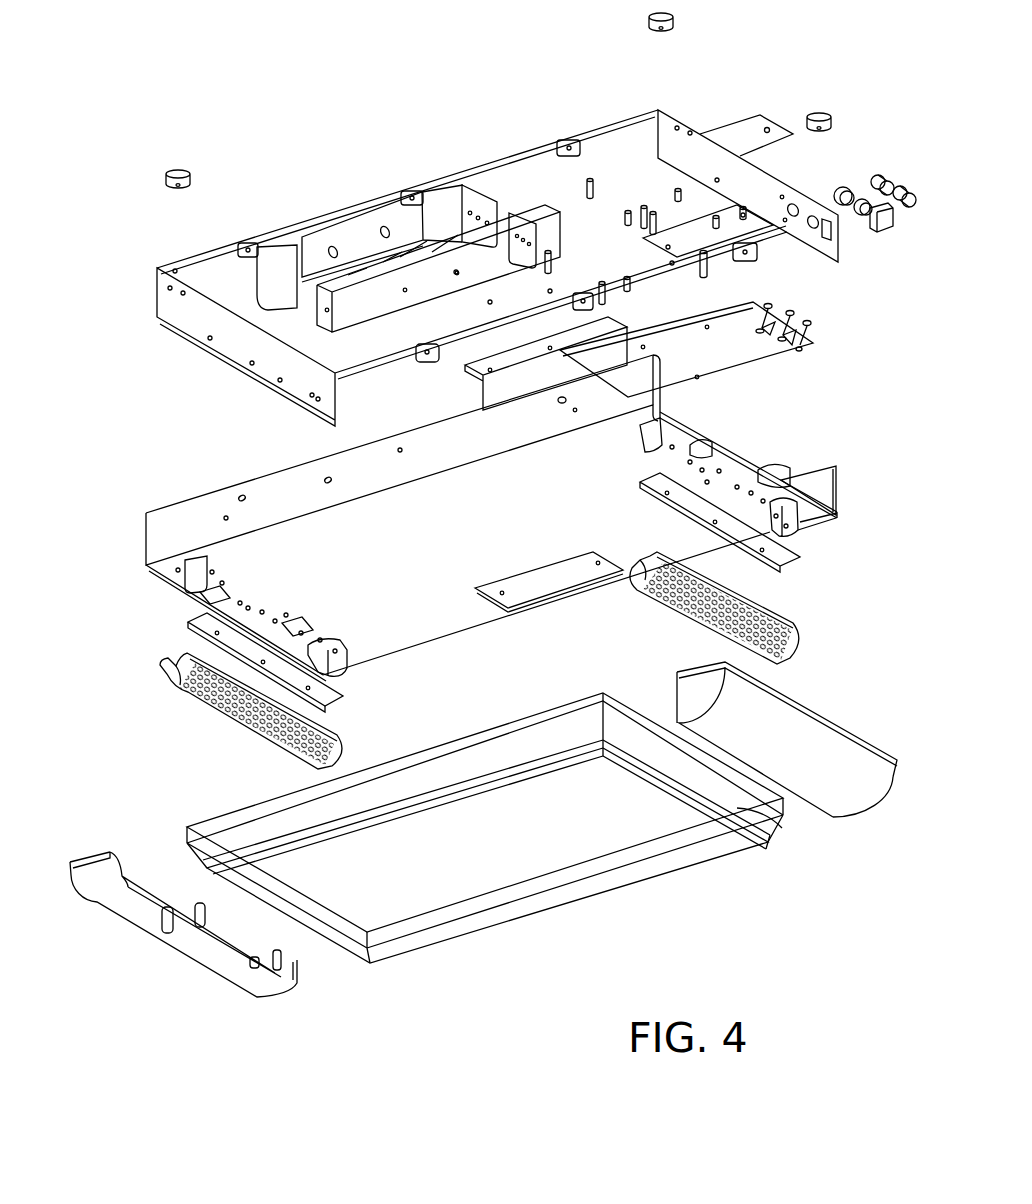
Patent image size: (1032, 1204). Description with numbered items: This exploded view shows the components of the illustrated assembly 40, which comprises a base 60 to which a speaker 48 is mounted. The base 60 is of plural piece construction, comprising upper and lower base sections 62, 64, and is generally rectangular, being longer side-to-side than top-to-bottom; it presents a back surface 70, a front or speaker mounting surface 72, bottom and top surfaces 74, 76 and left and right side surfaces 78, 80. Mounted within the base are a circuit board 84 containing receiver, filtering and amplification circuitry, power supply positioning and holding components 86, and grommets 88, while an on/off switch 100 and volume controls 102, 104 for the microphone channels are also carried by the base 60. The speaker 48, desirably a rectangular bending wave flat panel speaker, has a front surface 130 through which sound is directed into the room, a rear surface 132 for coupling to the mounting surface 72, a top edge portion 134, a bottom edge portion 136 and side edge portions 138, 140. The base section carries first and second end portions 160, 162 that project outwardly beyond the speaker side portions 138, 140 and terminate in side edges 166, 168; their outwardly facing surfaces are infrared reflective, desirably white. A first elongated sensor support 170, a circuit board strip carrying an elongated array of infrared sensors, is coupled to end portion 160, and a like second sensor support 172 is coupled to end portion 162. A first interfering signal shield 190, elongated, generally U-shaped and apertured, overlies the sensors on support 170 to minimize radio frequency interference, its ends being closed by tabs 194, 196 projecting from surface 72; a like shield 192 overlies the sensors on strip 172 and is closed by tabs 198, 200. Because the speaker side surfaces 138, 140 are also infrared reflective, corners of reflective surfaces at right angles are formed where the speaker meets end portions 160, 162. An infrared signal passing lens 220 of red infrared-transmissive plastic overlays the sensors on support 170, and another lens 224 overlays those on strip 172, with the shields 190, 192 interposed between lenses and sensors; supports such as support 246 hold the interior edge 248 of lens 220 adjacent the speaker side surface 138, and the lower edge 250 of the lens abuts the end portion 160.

The assembly 40 is at (385, 155).
The speaker 48 is at (547, 877).
The base 60 is at (118, 582).
The upper base section 62 is at (221, 498).
The lower base section 64 is at (188, 312).
The back surface 70 is at (510, 153).
The front or speaker mounting surface 72 is at (420, 623).
The bottom surface 74 is at (840, 492).
The top surface 76 is at (313, 477).
The left side surface 78 is at (225, 340).
The right side surface 80 is at (687, 147).
The circuit board 84 is at (718, 365).
The power supply positioning and holding components 86 is at (521, 230).
The grommet 88 is at (175, 168).
The on/off switch 100 is at (878, 232).
The volume control 102 is at (911, 180).
The volume control 104 is at (877, 178).
The front surface 130 is at (445, 905).
The rear surface 132 is at (525, 722).
The frame inner lip 134 is at (401, 790).
The bottom edge portion 136 is at (665, 878).
The speaker side edge portion 138 is at (327, 950).
The speaker side edge portion 140 is at (755, 810).
The first end portion 160 is at (186, 622).
The second end portion 162 is at (740, 443).
The side edge 166 is at (170, 575).
The side edge 168 is at (762, 460).
The first elongated sensor support 170 is at (223, 642).
The second sensor support 172 is at (785, 562).
The first interfering signal shield 190 is at (205, 710).
The second interfering signal shield 192 is at (796, 647).
The tab 194 is at (213, 573).
The tab 196 is at (360, 652).
The closure member or tab 198 is at (638, 443).
The closure member or tab 200 is at (800, 514).
The infrared signal passing lens 220 is at (113, 917).
The infrared signal passing lens 224 is at (785, 725).
The support 246 is at (203, 920).
The interior edge 248 is at (177, 910).
The lower edge 250 is at (95, 855).